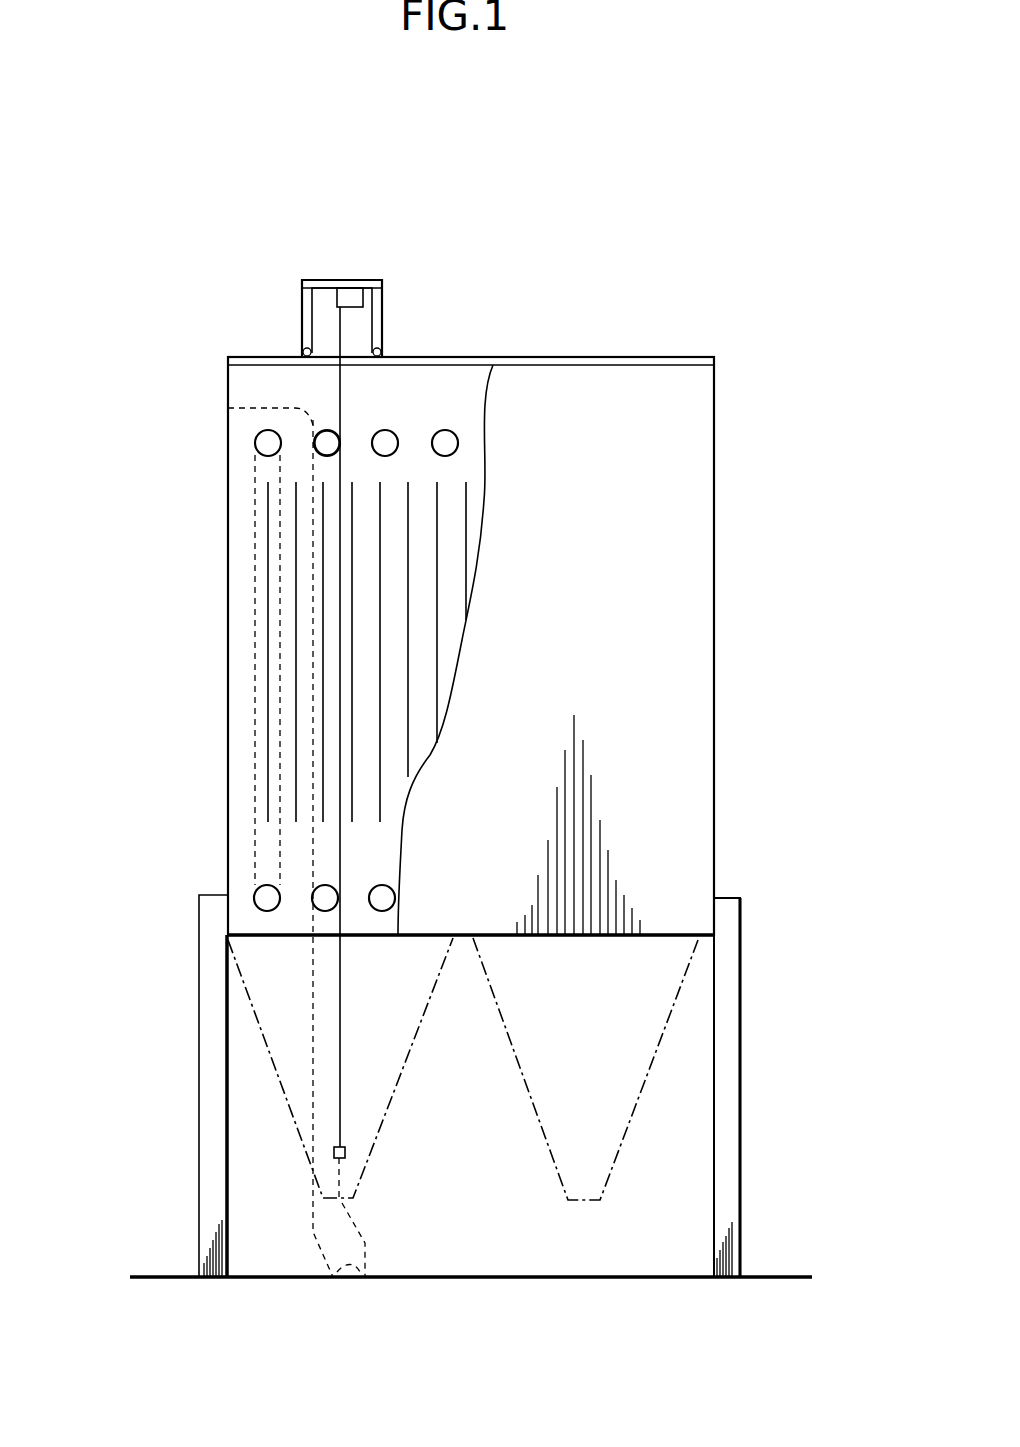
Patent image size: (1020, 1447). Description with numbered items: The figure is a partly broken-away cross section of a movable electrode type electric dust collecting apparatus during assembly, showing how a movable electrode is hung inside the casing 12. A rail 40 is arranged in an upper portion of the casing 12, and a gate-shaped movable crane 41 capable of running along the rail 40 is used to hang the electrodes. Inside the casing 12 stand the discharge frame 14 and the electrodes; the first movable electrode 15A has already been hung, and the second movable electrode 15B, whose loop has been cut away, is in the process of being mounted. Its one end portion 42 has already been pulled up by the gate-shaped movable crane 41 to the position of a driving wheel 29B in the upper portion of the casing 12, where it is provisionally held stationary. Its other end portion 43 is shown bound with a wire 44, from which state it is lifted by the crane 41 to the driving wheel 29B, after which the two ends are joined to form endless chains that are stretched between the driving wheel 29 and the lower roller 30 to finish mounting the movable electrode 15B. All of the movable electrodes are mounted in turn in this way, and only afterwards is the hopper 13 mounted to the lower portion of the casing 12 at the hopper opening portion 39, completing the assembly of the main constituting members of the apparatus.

The casing 12 is at (693, 580).
The hopper 13 is at (372, 1152).
The discharge frame 14 is at (267, 600).
The first movable electrode 15A is at (254, 541).
The second movable electrode 15B is at (308, 978).
The driving wheel 29 is at (458, 441).
The driving wheel 29B is at (326, 429).
The lower roller 30 is at (390, 895).
The hopper opening portion 39 is at (370, 937).
The rail 40 is at (460, 357).
The gate-shaped movable crane 41 is at (353, 280).
The one end portion of the movable electrode 42 is at (228, 408).
The other end portion of the movable electrode 43 is at (334, 1156).
The wire 44 is at (337, 1045).